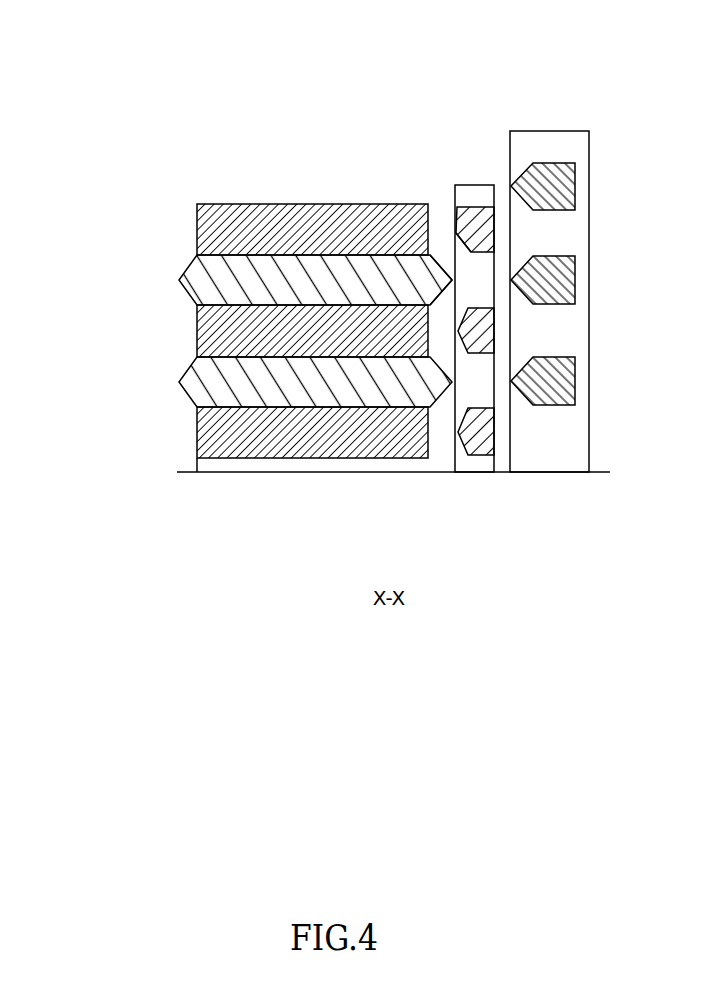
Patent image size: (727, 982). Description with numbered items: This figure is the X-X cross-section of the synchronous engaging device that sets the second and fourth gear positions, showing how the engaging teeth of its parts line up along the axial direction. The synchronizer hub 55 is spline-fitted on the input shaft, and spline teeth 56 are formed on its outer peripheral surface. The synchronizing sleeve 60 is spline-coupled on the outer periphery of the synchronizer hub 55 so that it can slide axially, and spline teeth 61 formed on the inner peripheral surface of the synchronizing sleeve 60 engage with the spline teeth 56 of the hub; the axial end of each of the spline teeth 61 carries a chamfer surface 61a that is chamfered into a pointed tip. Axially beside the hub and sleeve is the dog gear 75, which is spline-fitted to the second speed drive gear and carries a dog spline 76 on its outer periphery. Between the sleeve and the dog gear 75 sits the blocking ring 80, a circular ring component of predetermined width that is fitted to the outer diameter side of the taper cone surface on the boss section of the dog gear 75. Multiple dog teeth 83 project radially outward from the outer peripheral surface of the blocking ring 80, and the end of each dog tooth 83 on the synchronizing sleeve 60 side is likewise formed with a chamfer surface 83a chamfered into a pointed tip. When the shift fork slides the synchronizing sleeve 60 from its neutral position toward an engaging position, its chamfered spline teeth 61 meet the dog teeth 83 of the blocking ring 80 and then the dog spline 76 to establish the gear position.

The synchronizer hub 55 is at (243, 335).
The spline teeth 56 is at (213, 234).
The synchronizing sleeve 60 is at (255, 330).
The spline teeth 61 is at (183, 280).
The chamfer surface 61a is at (452, 278).
The dog gear 75 is at (549, 131).
The dog spline 76 is at (562, 183).
The blocking ring 80 is at (481, 185).
The dog tooth 83 is at (463, 208).
The chamfer surface 83a is at (456, 247).